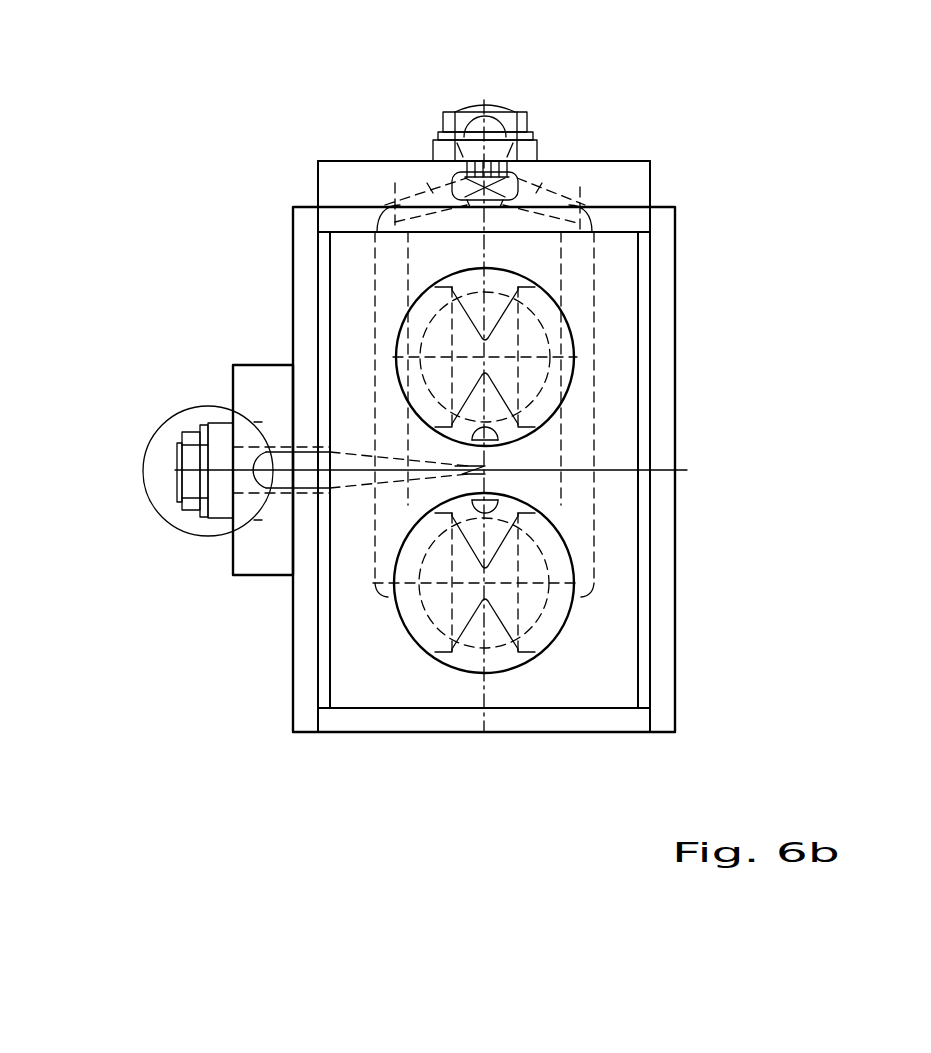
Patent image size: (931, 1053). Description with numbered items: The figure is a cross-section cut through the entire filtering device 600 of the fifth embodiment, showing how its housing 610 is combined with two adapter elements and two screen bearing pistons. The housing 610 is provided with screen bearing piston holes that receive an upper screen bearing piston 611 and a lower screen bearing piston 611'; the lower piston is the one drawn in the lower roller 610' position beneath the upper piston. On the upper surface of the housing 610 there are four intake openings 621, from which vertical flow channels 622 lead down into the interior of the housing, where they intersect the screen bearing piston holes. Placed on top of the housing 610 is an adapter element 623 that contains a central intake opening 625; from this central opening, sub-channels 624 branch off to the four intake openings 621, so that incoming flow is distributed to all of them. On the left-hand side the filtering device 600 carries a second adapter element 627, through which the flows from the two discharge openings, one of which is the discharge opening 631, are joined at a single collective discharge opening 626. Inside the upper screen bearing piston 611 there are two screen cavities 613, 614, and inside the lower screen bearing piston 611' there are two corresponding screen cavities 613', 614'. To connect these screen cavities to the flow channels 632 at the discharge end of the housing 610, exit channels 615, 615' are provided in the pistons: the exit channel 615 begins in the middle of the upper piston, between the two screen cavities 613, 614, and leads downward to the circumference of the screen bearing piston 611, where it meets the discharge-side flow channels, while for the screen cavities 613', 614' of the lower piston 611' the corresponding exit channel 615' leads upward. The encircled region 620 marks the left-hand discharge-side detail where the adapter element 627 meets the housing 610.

The filtering device 600 is at (141, 98).
The housing 610 is at (596, 357).
The second roller 610' is at (597, 583).
The screen bearing piston 611 is at (595, 357).
The screen bearing piston 611' is at (587, 598).
The screen cavity 613 is at (291, 297).
The screen cavity 613' is at (287, 625).
The screen cavity 614 is at (608, 338).
The screen cavity 614' is at (610, 570).
The exit channel 615 is at (291, 366).
The exit channel 615' is at (287, 551).
The housing 620 is at (557, 442).
The intake opening 621 is at (462, 124).
The vertical flow channel 622 is at (420, 387).
The adapter element 623 is at (443, 374).
The sub-channel 624 is at (475, 120).
The central intake opening 625 is at (485, 112).
The collective discharge opening 626 is at (264, 470).
The adapter element 627 is at (168, 454).
The discharge opening 631 is at (160, 484).
The flow channel 632 is at (186, 446).